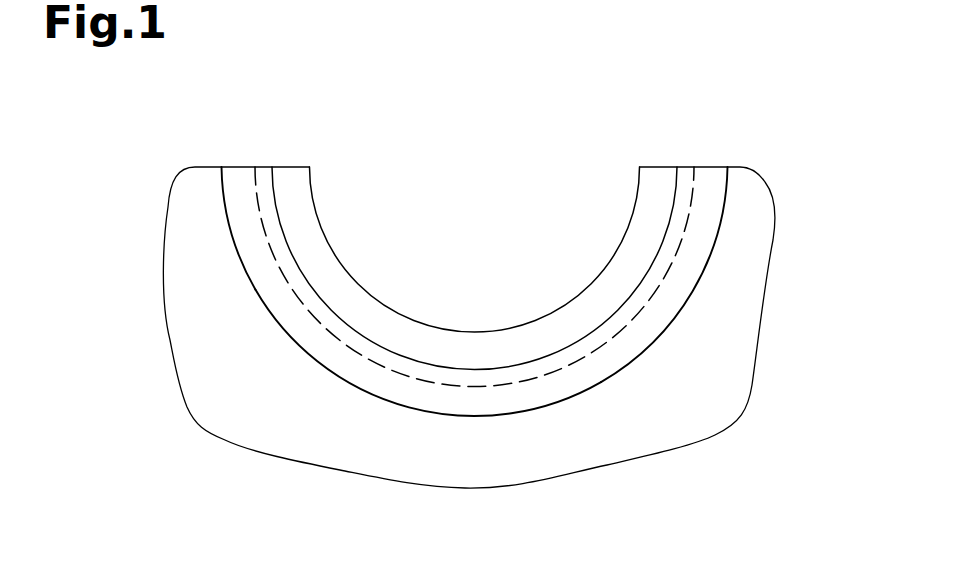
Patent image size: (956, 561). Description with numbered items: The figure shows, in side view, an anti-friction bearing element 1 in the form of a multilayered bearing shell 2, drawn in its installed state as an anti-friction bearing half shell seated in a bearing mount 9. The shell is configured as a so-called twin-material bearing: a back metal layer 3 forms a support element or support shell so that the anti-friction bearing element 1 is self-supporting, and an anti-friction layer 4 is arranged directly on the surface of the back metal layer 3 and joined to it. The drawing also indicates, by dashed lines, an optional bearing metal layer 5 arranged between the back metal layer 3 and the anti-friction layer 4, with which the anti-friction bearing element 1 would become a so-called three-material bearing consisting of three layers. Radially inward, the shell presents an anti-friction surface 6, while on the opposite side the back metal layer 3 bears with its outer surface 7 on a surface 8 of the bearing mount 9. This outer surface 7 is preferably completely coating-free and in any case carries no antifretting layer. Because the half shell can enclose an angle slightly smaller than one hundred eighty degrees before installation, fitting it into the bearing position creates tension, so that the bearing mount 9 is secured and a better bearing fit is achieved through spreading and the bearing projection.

The anti-friction bearing element 1 is at (474, 267).
The multilayered bearing shell 2 is at (737, 205).
The back metal layer 3 is at (482, 284).
The anti-friction layer 4 is at (475, 247).
The bearing metal layer 5 is at (688, 150).
The anti-friction surface 6 is at (347, 250).
The surface 7 is at (360, 402).
The surface 8 is at (230, 182).
The bearing mount 9 is at (170, 383).